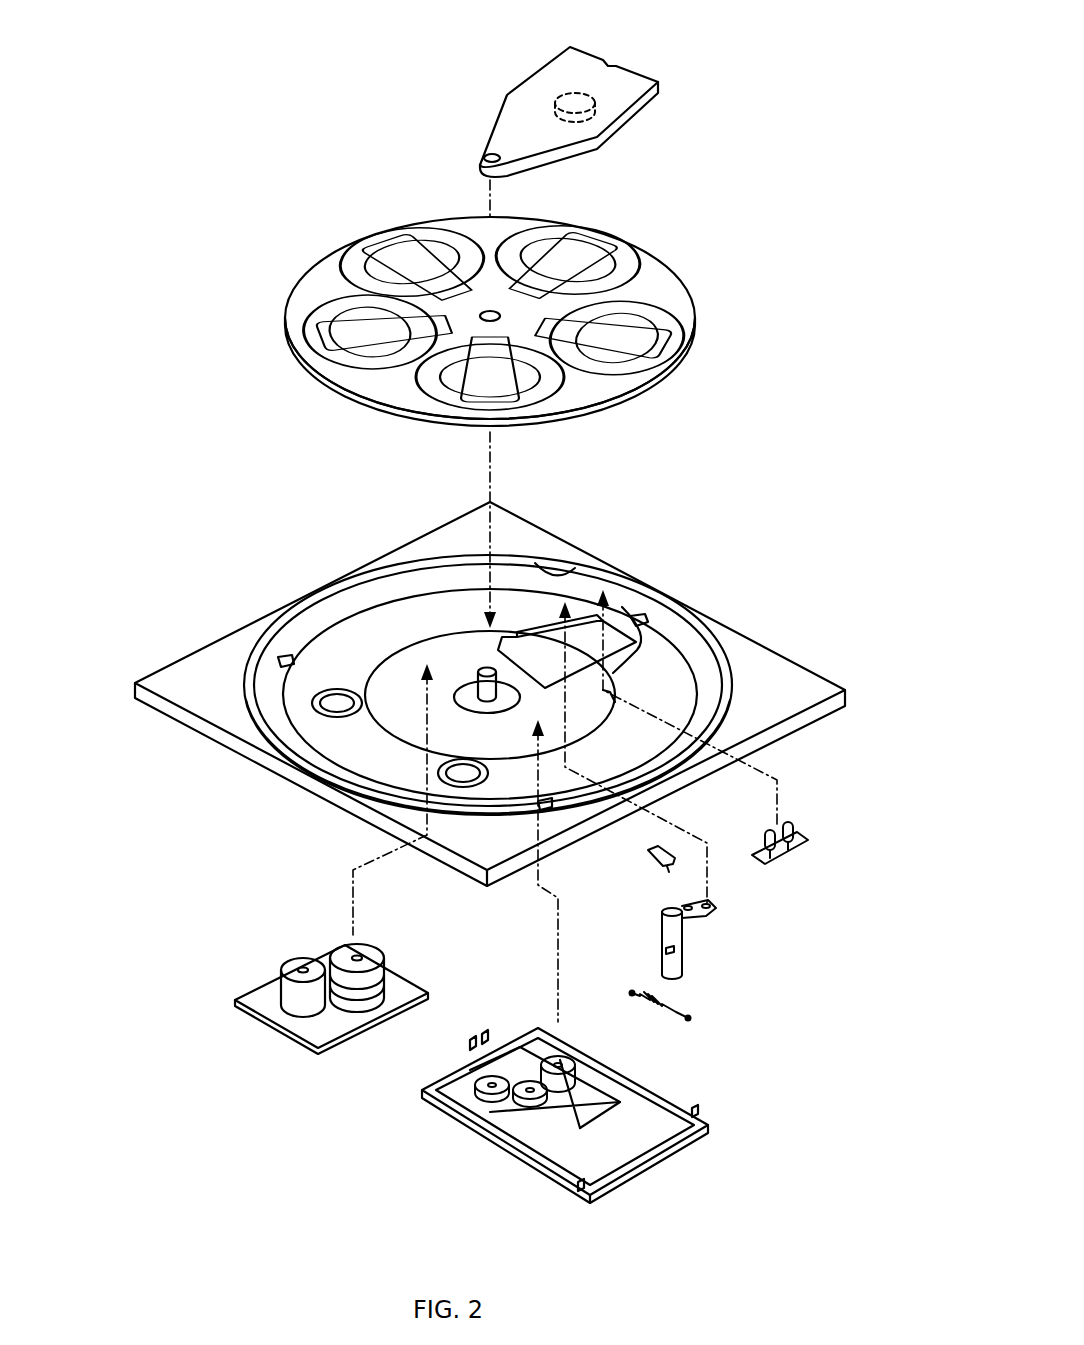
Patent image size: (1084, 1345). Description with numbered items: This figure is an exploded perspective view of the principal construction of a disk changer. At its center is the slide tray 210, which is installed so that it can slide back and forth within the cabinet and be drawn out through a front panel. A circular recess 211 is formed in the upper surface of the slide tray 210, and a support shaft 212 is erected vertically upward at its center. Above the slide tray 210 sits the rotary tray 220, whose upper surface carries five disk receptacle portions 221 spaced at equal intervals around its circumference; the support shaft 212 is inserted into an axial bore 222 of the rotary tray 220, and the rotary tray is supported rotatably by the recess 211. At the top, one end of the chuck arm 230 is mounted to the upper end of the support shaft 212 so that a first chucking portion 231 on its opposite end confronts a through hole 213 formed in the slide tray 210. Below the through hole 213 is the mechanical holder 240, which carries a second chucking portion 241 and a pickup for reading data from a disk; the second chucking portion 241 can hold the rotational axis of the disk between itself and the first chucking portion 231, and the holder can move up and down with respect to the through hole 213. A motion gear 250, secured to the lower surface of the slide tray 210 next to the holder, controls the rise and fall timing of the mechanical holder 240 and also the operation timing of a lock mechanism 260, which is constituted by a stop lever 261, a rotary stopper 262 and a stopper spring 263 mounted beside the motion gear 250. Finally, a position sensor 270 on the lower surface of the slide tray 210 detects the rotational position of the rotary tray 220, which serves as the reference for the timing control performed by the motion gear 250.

The slide tray 210 is at (760, 662).
The circular recess 211 is at (590, 563).
The support shaft 212 is at (470, 692).
The through hole 213 is at (640, 615).
The rotary tray 220 is at (320, 273).
The disk receptacle portions 221 is at (627, 265).
The axial bore 222 is at (443, 320).
The chuck arm 230 is at (592, 68).
The first chucking portion 231 is at (590, 118).
The mechanical holder 240 is at (540, 1165).
The second chucking portion 241 is at (583, 1060).
The motion gear 250 is at (380, 963).
The lock mechanism 260 is at (632, 853).
The stop lever 261 is at (710, 915).
The rotary stopper 262 is at (672, 850).
The stopper spring 263 is at (672, 1020).
The position sensor 270 is at (790, 848).